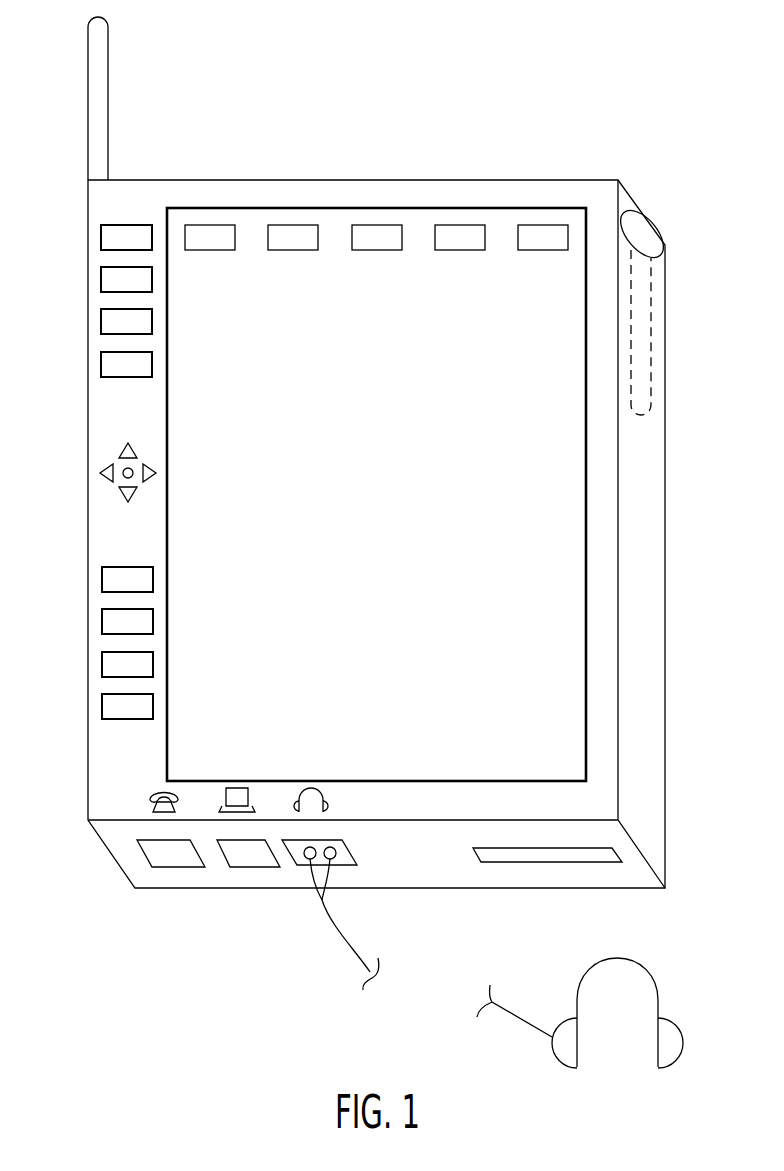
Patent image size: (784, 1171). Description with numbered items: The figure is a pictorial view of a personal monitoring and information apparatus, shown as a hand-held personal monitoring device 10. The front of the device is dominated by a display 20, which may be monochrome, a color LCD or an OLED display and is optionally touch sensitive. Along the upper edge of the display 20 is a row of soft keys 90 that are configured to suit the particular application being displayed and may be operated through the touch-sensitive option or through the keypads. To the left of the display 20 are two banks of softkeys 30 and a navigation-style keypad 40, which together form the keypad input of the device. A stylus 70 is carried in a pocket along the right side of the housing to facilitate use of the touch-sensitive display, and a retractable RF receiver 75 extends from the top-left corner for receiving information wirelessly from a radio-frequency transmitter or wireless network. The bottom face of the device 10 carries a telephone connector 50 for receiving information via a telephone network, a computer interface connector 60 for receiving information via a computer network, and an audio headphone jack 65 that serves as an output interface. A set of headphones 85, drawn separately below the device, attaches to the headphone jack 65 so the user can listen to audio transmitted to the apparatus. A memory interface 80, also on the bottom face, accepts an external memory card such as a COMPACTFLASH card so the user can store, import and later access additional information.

The personal monitoring device 10 is at (548, 177).
The display 20 is at (537, 491).
The softkeys (keypads) 30 is at (99, 238).
The softkeys (keypads) 40 is at (98, 473).
The telephone connector 50 is at (147, 809).
The computer interface connector 60 is at (222, 814).
The audio headphone jack 65 is at (332, 809).
The stylus 70 is at (648, 241).
The RF receiver 75 is at (111, 88).
The memory interface 80 is at (548, 855).
The headphones 85 is at (657, 994).
The soft keys 90 is at (543, 221).